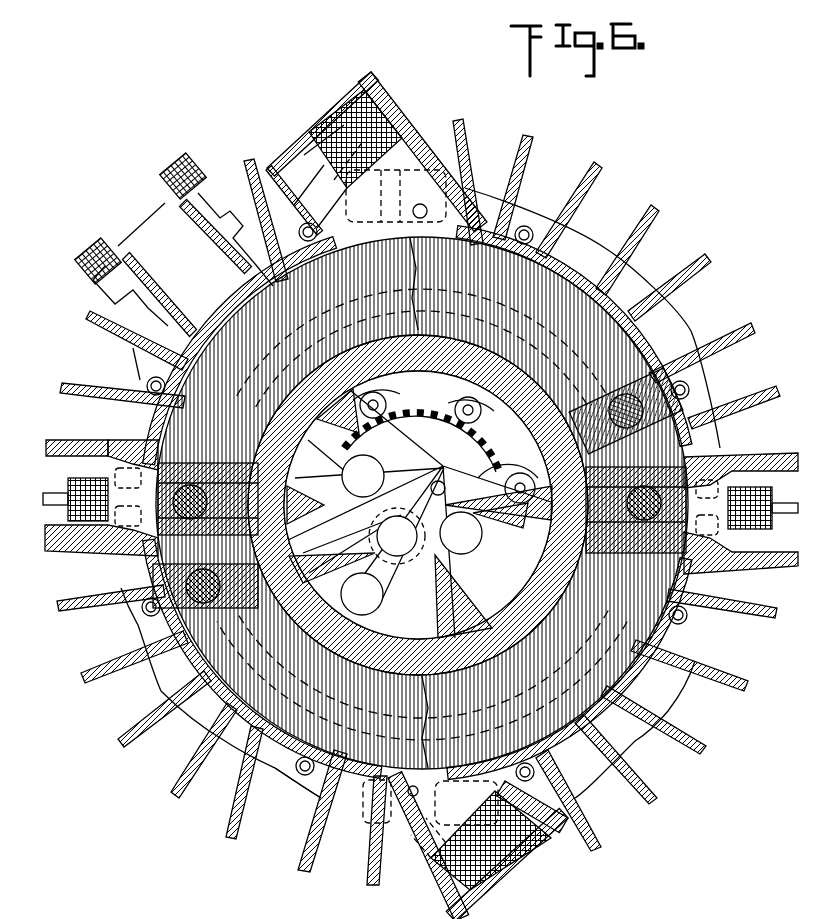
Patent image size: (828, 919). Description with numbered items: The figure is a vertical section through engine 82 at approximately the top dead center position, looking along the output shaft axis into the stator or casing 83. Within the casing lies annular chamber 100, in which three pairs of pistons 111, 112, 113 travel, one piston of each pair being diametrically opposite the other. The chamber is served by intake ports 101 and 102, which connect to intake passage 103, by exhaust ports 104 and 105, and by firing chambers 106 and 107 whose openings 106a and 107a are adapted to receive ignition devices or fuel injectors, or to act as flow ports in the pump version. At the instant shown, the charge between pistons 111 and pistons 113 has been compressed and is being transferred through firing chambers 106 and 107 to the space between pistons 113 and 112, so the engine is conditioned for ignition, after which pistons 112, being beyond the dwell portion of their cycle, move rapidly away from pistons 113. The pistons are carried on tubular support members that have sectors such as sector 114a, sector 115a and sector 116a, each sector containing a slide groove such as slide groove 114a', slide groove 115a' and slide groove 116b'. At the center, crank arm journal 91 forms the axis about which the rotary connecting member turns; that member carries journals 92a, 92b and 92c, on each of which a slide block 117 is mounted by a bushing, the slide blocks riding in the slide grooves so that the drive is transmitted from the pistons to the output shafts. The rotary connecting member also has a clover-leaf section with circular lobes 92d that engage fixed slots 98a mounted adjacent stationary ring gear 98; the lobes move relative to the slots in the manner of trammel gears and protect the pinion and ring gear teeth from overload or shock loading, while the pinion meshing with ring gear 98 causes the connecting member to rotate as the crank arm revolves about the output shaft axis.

The engine 82 is at (612, 152).
The stator or casing 83 is at (610, 285).
The stepped journal 91 is at (397, 536).
The journal 92a is at (461, 533).
The journal 92b is at (362, 594).
The journal 92c is at (363, 476).
The circular leaves or lobes 92d is at (450, 472).
The stationary ring gear 98 is at (418, 400).
The slots 98a is at (512, 465).
The annular chamber 100 is at (422, 503).
The intake port 101 is at (407, 237).
The intake port 102 is at (426, 760).
The intake passage 103 is at (243, 323).
The exhaust port 104 is at (300, 145).
The exhaust port 105 is at (505, 872).
The firing chamber 106 is at (717, 442).
The opening 106a is at (760, 512).
The firing chamber 107 is at (90, 545).
The opening 107a is at (62, 502).
The pistons 111 is at (150, 377).
The pistons 112 is at (680, 376).
The pistons 113 is at (690, 397).
The sector 114a is at (323, 456).
The slide groove 114a' is at (327, 464).
The sector 115a is at (493, 562).
The slide groove 115a' is at (411, 543).
The sector 116a is at (297, 787).
The slide groove 116b' is at (154, 693).
The slide blocks 117 is at (419, 514).